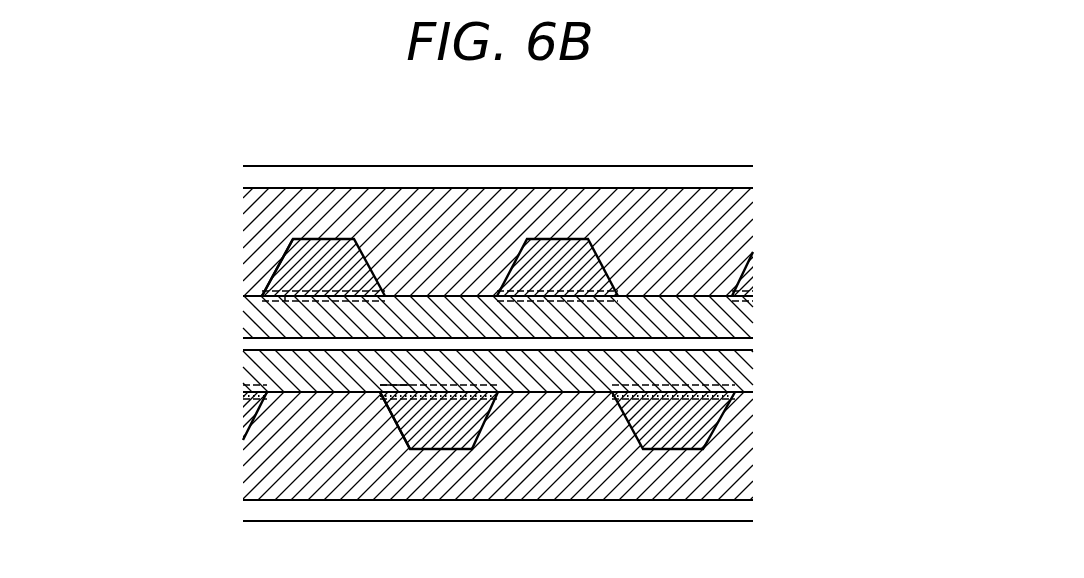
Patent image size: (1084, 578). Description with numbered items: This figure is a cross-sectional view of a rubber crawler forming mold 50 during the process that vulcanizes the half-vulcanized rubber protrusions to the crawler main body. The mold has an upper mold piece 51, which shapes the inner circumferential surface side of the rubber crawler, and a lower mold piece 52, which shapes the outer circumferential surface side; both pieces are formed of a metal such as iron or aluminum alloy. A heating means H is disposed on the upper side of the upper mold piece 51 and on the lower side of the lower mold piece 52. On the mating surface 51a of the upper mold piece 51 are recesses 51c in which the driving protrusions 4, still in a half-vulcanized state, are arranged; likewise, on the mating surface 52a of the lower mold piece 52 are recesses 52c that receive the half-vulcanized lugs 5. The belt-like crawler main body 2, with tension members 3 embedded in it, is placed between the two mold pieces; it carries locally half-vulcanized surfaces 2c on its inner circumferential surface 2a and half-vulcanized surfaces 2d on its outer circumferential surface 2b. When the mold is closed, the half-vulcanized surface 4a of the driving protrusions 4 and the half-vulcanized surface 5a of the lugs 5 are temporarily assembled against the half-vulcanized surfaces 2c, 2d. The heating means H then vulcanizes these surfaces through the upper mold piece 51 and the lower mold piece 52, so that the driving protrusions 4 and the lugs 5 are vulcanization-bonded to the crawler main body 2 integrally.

The rubber crawler forming mold 50 is at (605, 140).
The heating means H is at (499, 180).
The upper mold piece 51 is at (267, 220).
The mating surface of the upper mold piece 51a is at (638, 296).
The recesses of the upper mold piece 51c is at (283, 254).
The lower mold piece 52 is at (270, 458).
The mating surface of the lower mold piece 52a is at (533, 392).
The recesses of the lower mold piece 52c is at (395, 427).
The crawler main body 2 is at (755, 318).
The inner circumferential surface 2a is at (692, 296).
The outer circumferential surface 2b is at (582, 392).
The half-vulcanized surface of the crawler main body 2c is at (283, 302).
The half-vulcanized surface of the crawler main body 2d is at (405, 386).
The tension members 3 is at (743, 343).
The driving protrusions 4 is at (322, 247).
The half-vulcanized surface of the driving protrusions 4a is at (367, 292).
The lugs 5 is at (444, 437).
The half-vulcanized surface of the lugs 5a is at (481, 395).